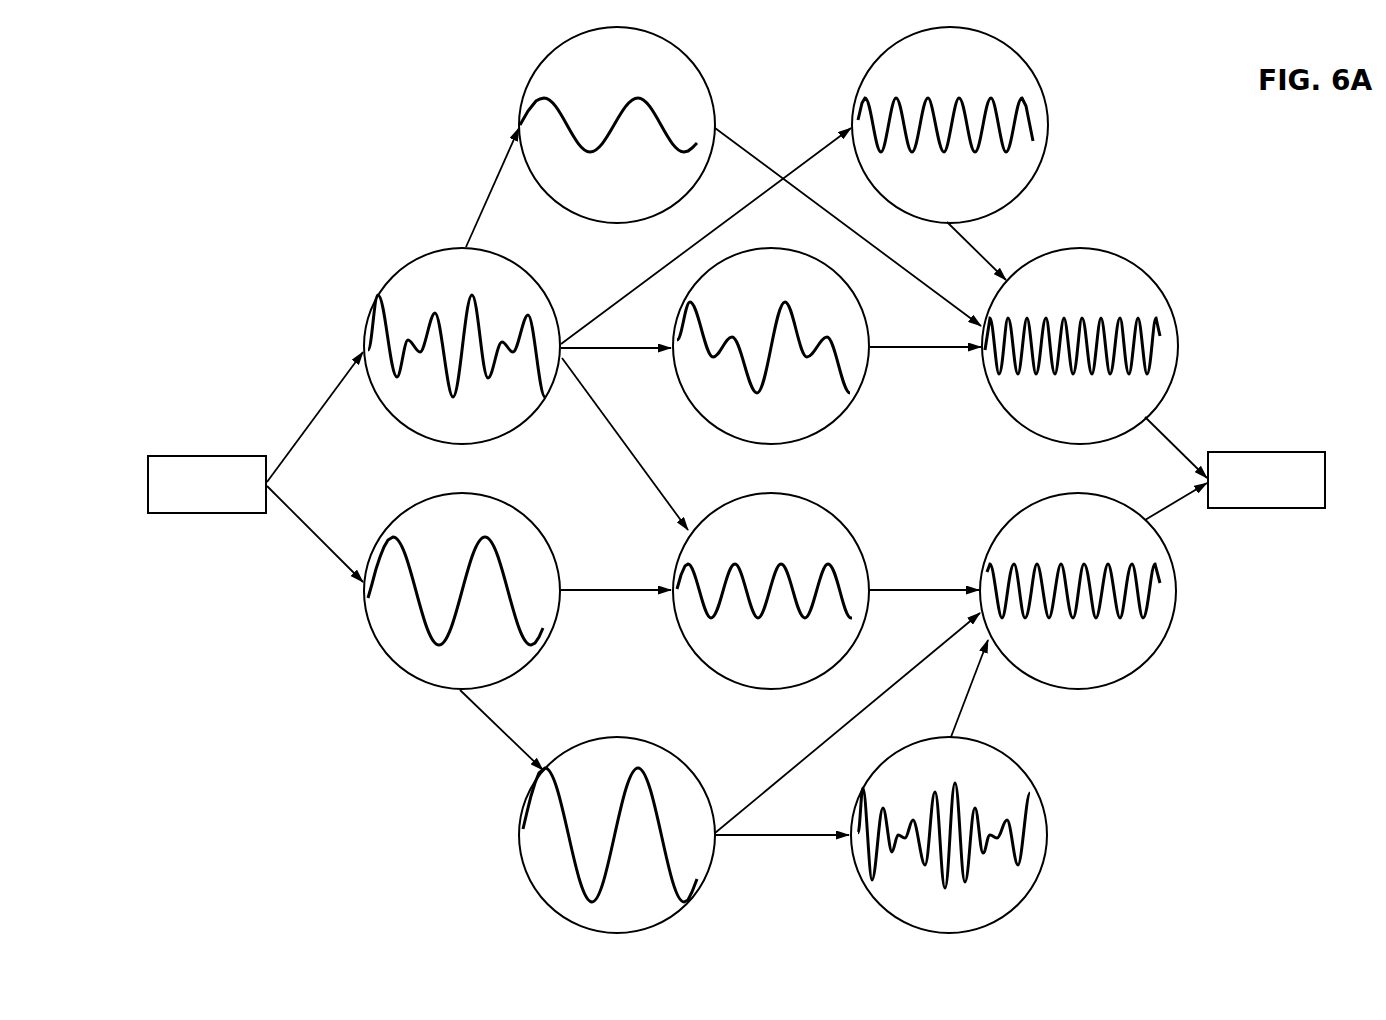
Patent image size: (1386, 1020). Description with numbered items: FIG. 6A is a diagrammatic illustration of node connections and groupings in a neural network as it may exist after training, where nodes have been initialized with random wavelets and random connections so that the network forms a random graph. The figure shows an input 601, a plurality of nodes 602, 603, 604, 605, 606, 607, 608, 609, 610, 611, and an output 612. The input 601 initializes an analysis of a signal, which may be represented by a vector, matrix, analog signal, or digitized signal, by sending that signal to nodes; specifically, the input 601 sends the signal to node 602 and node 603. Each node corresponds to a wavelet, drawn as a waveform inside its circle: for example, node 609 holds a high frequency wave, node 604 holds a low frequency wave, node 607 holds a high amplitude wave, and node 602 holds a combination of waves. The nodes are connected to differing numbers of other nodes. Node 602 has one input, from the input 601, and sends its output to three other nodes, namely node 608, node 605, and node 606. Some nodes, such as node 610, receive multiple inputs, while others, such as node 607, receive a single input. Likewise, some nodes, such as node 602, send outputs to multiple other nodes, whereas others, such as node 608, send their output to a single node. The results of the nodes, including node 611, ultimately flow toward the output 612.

The input 601 is at (203, 457).
The node 602 is at (531, 268).
The node 603 is at (531, 514).
The node 604 is at (678, 42).
The node 605 is at (858, 303).
The node 606 is at (858, 548).
The node 607 is at (694, 777).
The node 608 is at (1006, 42).
The node 609 is at (1161, 284).
The node 610 is at (1178, 579).
The node 611 is at (1038, 791).
The output 612 is at (1325, 452).